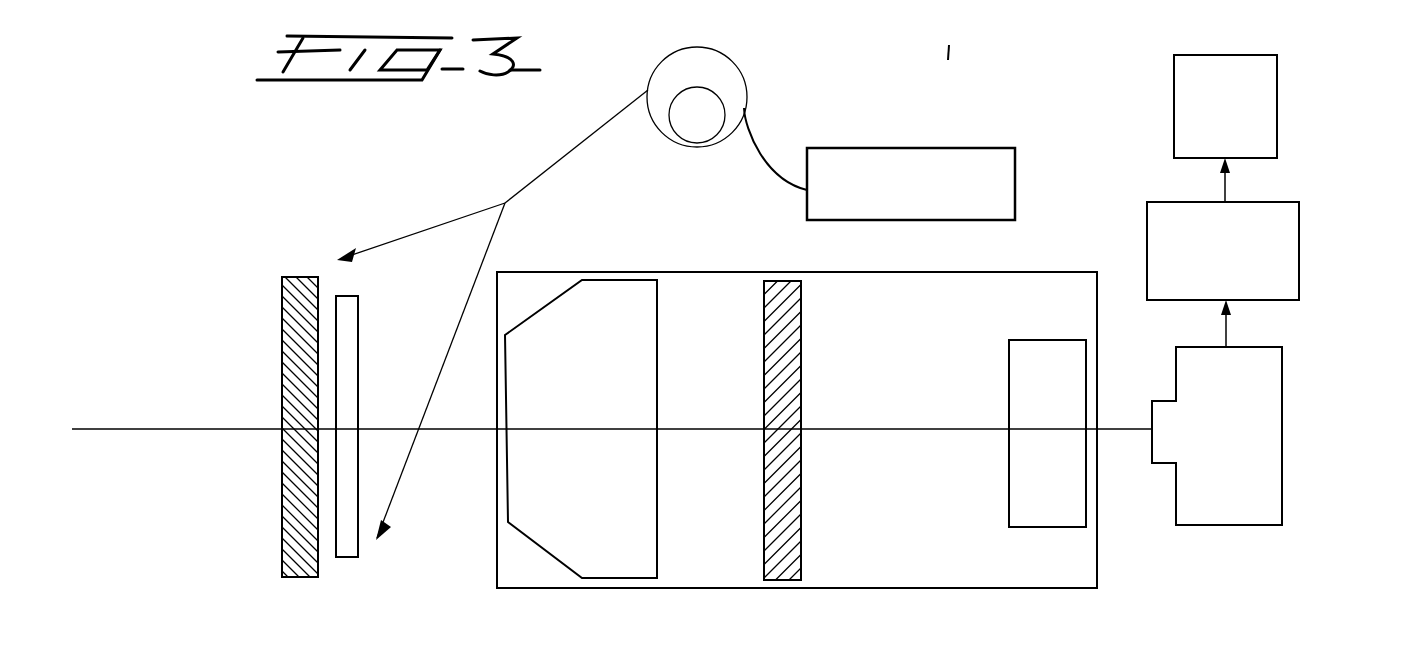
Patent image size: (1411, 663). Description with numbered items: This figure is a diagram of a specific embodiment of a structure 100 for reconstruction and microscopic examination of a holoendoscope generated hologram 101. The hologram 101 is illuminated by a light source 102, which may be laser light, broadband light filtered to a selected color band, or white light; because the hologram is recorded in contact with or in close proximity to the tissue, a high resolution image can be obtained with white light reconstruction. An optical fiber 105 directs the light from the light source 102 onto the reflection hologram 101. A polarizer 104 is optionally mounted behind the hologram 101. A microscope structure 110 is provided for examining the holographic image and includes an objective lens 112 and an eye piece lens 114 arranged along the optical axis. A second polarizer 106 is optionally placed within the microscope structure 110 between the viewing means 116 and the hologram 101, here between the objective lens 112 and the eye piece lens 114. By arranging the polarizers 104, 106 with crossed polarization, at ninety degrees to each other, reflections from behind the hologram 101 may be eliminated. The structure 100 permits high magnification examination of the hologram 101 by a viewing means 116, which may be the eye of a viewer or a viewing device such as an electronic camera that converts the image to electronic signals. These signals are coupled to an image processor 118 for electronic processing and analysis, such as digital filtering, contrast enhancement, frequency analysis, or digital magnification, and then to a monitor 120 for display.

The structure 100 is at (783, 640).
The hologram 101 is at (358, 373).
The light source 102 is at (932, 148).
The polarizer 104 is at (282, 512).
The optical fiber 105 is at (763, 148).
The polarizer 106 is at (801, 385).
The microscope structure 110 is at (1040, 272).
The objective lens 112 is at (657, 380).
The eye piece lens 114 is at (1009, 382).
The viewing means 116 is at (1233, 525).
The image processor 118 is at (1299, 267).
The monitor 120 is at (1277, 133).